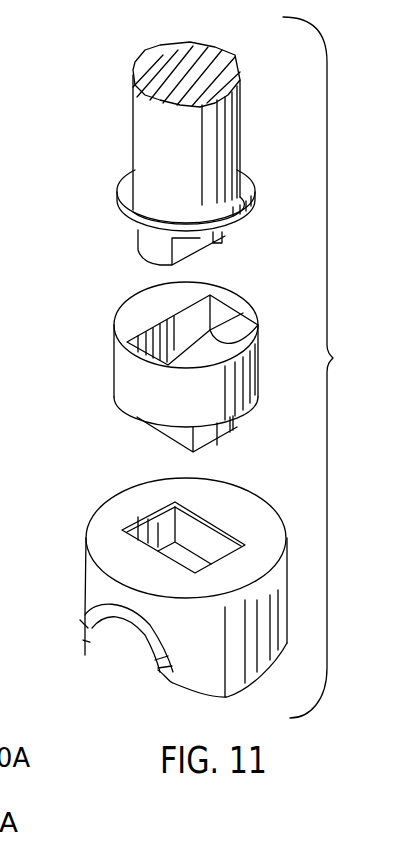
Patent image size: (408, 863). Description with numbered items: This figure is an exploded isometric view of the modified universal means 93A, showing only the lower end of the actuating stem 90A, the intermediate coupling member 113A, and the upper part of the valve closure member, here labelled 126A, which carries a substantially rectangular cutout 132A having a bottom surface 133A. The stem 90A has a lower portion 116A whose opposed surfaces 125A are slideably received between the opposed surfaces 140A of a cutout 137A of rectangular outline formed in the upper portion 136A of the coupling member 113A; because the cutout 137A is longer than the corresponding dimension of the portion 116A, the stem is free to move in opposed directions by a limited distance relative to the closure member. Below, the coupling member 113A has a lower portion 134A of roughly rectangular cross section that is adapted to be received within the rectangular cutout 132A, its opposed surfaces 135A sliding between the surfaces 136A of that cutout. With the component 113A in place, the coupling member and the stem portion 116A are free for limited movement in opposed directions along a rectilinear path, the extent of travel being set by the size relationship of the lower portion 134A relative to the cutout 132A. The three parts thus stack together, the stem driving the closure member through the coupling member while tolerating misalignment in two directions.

The stem 90A is at (133, 116).
The opposed surfaces 125A is at (133, 215).
The lower portion of stem 116A is at (138, 238).
The universal means 93A is at (100, 294).
The coupling member 113A is at (104, 368).
The opposed surfaces of cutout 140A is at (170, 332).
The cutout 137A is at (234, 290).
The upper portion / surfaces of cutout 136A is at (104, 328).
The opposed surfaces 135A is at (172, 432).
The lower portion of coupling member 134A is at (218, 433).
The base member 126A is at (85, 580).
The rectangular cutout 132A is at (142, 517).
The bottom surface 133A is at (182, 552).